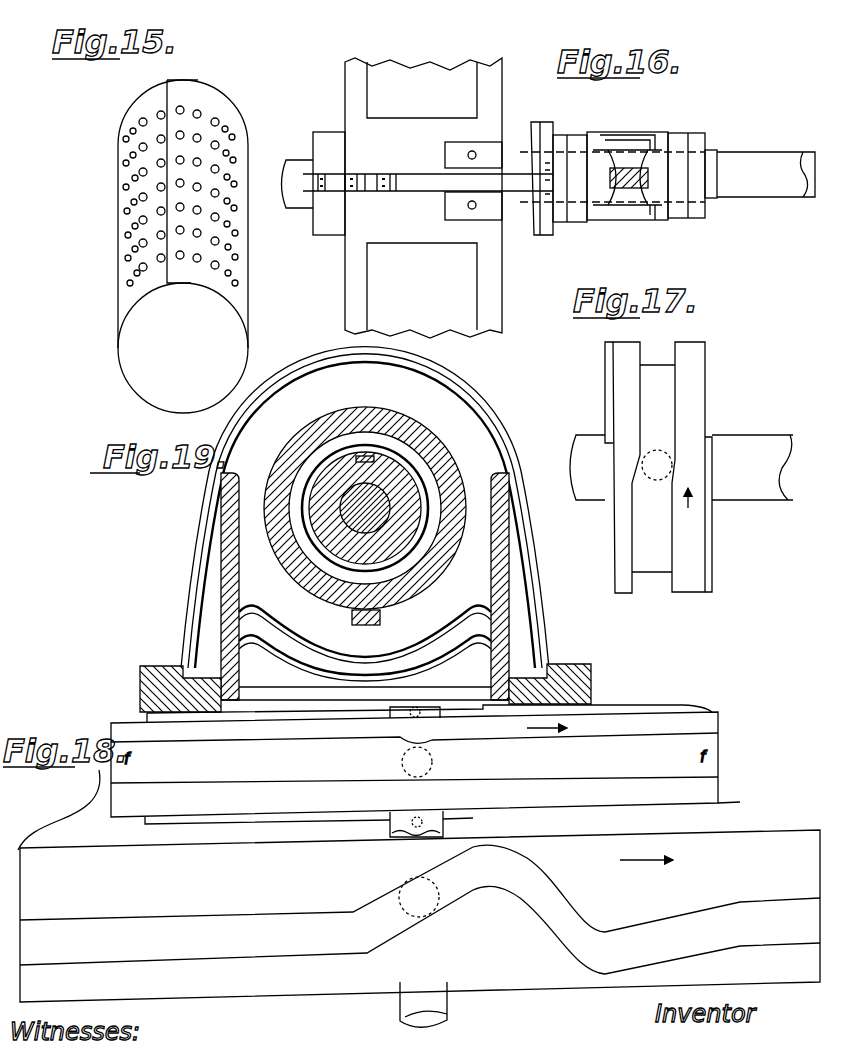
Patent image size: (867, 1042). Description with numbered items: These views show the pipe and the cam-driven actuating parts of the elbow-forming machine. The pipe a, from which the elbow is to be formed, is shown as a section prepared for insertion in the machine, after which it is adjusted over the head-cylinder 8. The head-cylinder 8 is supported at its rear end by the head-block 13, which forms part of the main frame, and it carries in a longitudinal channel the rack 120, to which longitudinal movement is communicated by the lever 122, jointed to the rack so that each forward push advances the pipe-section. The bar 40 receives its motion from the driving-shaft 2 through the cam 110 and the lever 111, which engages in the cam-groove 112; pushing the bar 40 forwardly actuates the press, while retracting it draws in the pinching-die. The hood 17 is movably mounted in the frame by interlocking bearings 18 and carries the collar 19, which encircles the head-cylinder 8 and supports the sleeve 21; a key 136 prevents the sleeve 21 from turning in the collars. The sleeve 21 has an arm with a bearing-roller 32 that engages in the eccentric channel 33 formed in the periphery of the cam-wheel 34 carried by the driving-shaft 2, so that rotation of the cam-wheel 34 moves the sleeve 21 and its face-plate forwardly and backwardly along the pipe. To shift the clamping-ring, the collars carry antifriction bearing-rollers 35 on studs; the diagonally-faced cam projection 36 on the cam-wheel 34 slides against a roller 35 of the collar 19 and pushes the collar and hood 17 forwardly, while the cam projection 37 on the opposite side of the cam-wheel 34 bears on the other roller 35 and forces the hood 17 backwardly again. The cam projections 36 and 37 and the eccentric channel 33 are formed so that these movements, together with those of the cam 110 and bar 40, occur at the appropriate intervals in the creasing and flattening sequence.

In FIG. 17, the driving-shaft 2 is at (681, 467).
In FIG. 18, the driving-shaft 2 is at (427, 1000).
In FIG. 19, the head-cylinder 8 is at (400, 532).
In FIG. 16, the head-block 13 is at (392, 198).
In FIG. 19, the hood 17 is at (240, 583).
In FIG. 19, the interlocking bearings 18 is at (168, 667).
In FIG. 19, the collar 19 is at (497, 441).
In FIG. 19, the sleeve 21 is at (404, 596).
In FIG. 17, the bearing wheel or roller 32 is at (645, 473).
In FIG. 18, the bearing wheel or roller 32 is at (433, 762).
In FIG. 17, the eccentric channel 33 is at (644, 467).
In FIG. 18, the eccentric channel 33 is at (414, 764).
In FIG. 17, the cam-wheel 34 is at (688, 467).
In FIG. 18, the cam-wheel 34 is at (414, 793).
In FIG. 18, the antifriction bearing-rollers 35 is at (417, 717).
In FIG. 17, the cam projection 36 is at (607, 372).
In FIG. 18, the cam projection 36 is at (683, 710).
In FIG. 17, the cam projection 37 is at (712, 447).
In FIG. 18, the cam projection 37 is at (471, 811).
In FIG. 16, the bar 40 is at (766, 174).
In FIG. 19, the bar 40 is at (353, 497).
In FIG. 18, the cam 110 is at (420, 916).
In FIG. 16, the lever 111 is at (643, 168).
In FIG. 18, the lever 111 is at (436, 892).
In FIG. 18, the cam-groove 112 is at (420, 909).
In FIG. 16, the rack 120 is at (356, 174).
In FIG. 19, the rack 120 is at (365, 455).
In FIG. 16, the lever 122 is at (543, 228).
In FIG. 19, the key 136 is at (376, 626).
In FIG. 19, the pipe a is at (379, 456).